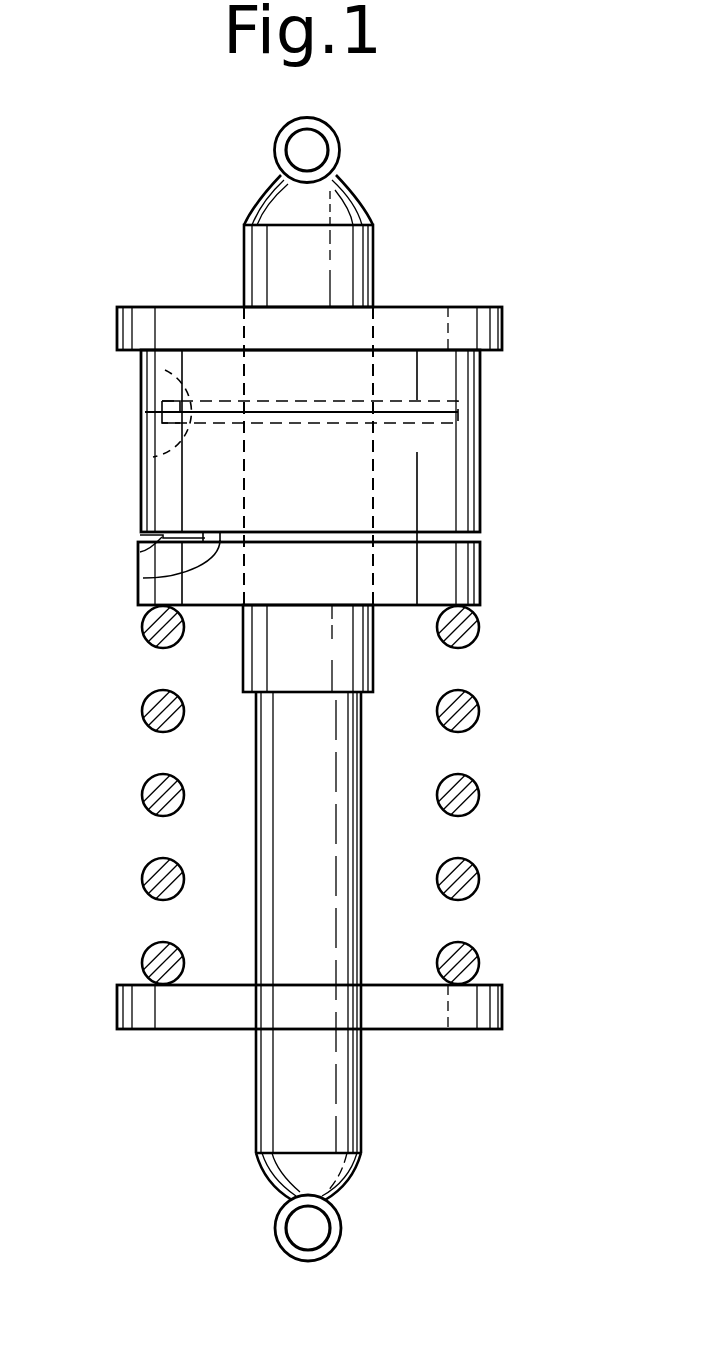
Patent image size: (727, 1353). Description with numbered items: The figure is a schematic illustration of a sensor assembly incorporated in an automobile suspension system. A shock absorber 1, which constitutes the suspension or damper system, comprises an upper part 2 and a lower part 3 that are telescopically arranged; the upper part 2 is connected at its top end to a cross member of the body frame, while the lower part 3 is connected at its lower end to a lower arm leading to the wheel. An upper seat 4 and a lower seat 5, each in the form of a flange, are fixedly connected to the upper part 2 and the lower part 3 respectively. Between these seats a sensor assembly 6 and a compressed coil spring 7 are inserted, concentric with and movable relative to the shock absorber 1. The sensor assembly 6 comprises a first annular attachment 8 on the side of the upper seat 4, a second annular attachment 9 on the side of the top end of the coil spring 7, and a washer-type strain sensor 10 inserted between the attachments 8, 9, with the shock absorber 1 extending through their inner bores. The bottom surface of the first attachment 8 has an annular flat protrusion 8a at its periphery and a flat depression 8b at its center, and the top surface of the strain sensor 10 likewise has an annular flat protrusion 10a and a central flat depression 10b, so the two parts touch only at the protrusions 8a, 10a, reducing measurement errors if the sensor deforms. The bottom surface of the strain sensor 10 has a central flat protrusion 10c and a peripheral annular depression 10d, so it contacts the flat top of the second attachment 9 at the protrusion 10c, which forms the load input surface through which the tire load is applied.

The shock absorber 1 is at (414, 189).
The upper part 2 is at (373, 245).
The lower part 3 is at (363, 1137).
The upper seat 4 is at (502, 331).
The lower seat 5 is at (502, 1013).
The sensor assembly 6 is at (581, 444).
The compressed coil spring 7 is at (480, 793).
The first annular attachment 8 is at (482, 395).
The annular flat protrusion 8a is at (147, 421).
The flat depression 8b is at (153, 457).
The second annular attachment 9 is at (482, 580).
The washer-type strain sensor 10 is at (482, 487).
The annular flat protrusion 10a is at (149, 412).
The flat depression 10b is at (165, 370).
The flat protrusion 10c is at (143, 578).
The annular flat depression 10d is at (140, 552).